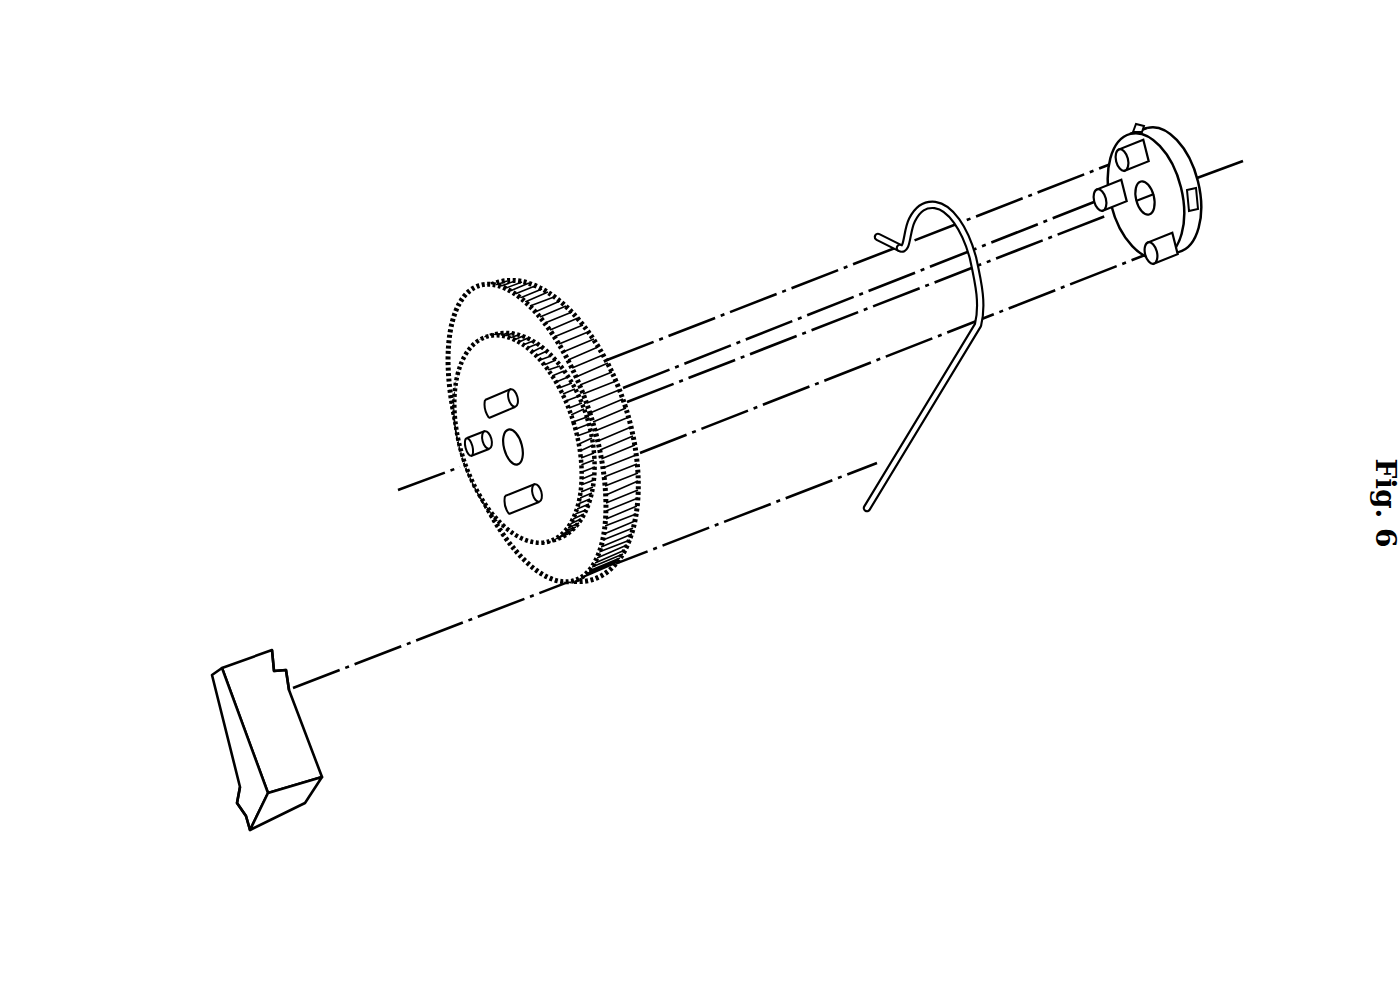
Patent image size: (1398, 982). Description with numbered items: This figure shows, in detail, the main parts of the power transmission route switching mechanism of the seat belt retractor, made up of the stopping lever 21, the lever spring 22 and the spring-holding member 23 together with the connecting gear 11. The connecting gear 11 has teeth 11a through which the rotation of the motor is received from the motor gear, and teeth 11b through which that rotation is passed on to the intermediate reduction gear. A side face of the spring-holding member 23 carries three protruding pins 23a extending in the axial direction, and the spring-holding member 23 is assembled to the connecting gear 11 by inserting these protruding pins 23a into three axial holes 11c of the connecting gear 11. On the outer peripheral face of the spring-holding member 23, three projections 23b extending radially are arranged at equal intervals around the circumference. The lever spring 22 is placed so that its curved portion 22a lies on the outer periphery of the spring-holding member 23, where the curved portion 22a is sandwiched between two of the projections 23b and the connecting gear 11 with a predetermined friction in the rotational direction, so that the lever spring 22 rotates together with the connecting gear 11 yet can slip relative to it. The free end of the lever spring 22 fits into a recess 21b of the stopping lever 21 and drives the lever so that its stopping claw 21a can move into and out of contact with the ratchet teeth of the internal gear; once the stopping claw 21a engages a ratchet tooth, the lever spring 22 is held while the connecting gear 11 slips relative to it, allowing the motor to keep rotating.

The connecting gear 11 is at (525, 390).
The teeth of the connecting gear 11a is at (575, 338).
The teeth of the connecting gear 11b is at (520, 303).
The axial holes 11c is at (505, 395).
The stopping lever 21 is at (271, 697).
The stopping claw 21a is at (246, 814).
The recess 21b is at (288, 672).
The lever spring 22 is at (951, 324).
The curved portion 22a is at (927, 207).
The spring-holding member 23 is at (1157, 179).
The protruding pins 23a is at (1117, 150).
The projections 23b is at (1137, 124).